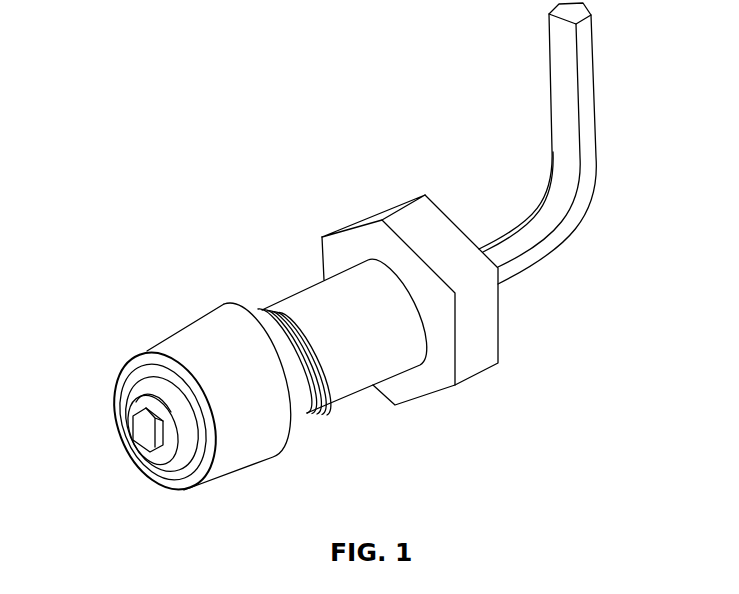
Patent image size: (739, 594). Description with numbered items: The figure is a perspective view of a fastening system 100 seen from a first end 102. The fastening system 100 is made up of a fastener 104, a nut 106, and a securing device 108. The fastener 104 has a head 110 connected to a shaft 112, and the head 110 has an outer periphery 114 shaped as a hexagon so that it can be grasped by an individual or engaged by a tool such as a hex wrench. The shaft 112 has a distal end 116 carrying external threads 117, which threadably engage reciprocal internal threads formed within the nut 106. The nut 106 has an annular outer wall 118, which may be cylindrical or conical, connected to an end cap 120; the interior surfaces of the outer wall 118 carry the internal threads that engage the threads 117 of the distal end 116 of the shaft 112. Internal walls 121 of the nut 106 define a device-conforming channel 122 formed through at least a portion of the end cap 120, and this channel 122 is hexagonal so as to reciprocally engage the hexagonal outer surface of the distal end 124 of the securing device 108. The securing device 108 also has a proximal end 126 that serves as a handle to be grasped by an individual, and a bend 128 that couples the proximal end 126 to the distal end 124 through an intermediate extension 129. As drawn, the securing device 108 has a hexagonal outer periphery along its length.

The fastening system 100 is at (150, 108).
The first end 102 is at (100, 373).
The fastener 104 is at (353, 210).
The nut 106 is at (162, 318).
The securing device 108 is at (608, 83).
The head 110 is at (424, 196).
The shaft 112 is at (292, 296).
The outer periphery 114 is at (477, 368).
The distal end 116 is at (268, 312).
The external threads 117 is at (315, 410).
The annular outer wall 118 is at (262, 458).
The end cap 120 is at (133, 415).
The internal walls 121 is at (122, 388).
The device-conforming channel 122 is at (153, 458).
The distal end 124 is at (138, 437).
The proximal end 126 is at (590, 43).
The bend 128 is at (582, 211).
The intermediate extension 129 is at (517, 265).